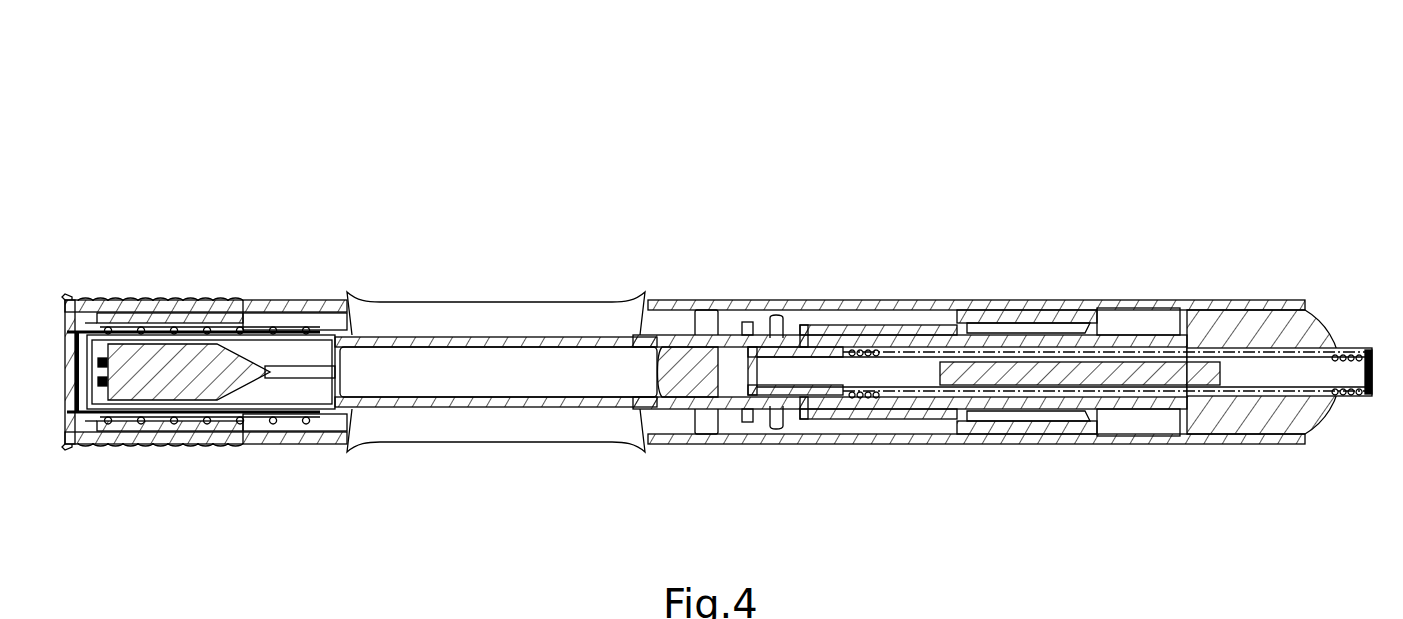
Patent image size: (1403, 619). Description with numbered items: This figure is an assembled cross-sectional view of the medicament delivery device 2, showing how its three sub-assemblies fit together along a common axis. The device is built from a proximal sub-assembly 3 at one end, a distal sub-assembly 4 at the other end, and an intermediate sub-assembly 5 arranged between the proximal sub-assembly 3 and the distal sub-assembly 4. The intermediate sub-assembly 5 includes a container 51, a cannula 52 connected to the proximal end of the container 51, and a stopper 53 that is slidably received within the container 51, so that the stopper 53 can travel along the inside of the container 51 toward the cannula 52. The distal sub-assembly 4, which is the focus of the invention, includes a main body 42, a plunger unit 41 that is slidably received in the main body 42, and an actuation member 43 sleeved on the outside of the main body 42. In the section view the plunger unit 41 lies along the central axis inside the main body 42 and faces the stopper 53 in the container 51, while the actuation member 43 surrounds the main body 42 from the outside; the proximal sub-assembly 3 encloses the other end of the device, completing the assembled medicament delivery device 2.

The medicament delivery device 2 is at (631, 122).
The proximal sub-assembly 3 is at (849, 292).
The distal sub-assembly 4 is at (1190, 520).
The plunger unit 41 is at (1157, 385).
The main body 42 is at (993, 402).
The actuation member 43 is at (893, 413).
The intermediate sub-assembly 5 is at (725, 520).
The container 51 is at (538, 400).
The cannula 52 is at (175, 373).
The stopper 53 is at (697, 370).